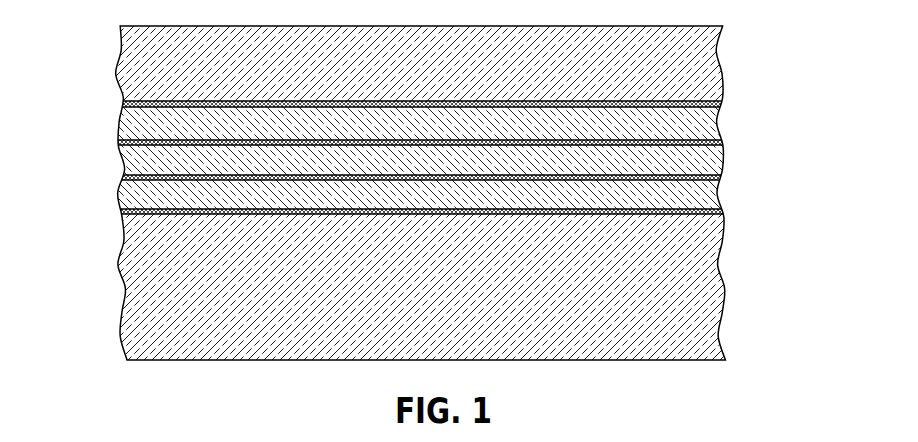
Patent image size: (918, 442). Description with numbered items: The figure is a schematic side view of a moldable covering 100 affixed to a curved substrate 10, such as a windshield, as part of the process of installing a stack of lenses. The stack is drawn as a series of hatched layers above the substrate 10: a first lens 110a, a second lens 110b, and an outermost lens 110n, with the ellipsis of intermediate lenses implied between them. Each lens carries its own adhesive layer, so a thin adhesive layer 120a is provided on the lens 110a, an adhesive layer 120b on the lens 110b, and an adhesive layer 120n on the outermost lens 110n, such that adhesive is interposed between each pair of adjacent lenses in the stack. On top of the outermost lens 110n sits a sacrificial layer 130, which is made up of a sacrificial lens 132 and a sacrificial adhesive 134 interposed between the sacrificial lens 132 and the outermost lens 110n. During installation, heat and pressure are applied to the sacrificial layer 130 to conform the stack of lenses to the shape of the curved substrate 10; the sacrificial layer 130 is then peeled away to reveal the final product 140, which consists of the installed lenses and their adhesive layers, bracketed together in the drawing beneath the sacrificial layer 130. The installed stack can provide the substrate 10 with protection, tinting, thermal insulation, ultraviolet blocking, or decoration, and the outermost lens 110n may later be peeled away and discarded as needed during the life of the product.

The curved substrate 10 is at (133, 262).
The moldable covering 100 is at (107, 26).
The sacrificial layer 130 is at (823, 35).
The sacrificial lens 132 is at (700, 57).
The sacrificial adhesive 134 is at (703, 100).
The final product 140 is at (823, 103).
The outermost lens 110n is at (709, 118).
The adhesive layer 120n is at (722, 141).
The lens 110b is at (710, 162).
The adhesive layer 120b is at (722, 177).
The lens 110a is at (718, 197).
The adhesive layer 120a is at (720, 213).